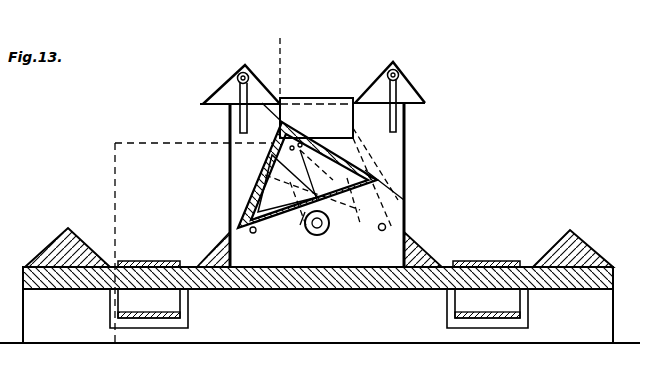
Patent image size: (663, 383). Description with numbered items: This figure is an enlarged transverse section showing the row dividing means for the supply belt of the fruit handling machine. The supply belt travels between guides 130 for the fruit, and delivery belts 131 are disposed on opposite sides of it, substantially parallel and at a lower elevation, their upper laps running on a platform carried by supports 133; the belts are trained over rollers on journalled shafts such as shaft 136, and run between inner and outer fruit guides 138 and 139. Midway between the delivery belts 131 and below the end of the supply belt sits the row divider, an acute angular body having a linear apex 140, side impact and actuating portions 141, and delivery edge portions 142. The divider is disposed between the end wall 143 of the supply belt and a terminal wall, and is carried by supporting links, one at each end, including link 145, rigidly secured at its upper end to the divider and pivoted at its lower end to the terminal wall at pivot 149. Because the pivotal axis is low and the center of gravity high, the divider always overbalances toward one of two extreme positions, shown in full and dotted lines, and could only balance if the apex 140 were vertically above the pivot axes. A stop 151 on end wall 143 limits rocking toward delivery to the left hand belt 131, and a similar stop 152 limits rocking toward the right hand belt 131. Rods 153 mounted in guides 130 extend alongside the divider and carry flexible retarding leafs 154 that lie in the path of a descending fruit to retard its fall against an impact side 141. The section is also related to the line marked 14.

The section line 14- 14 is at (192, 194).
The guides 130 is at (241, 78).
The delivery belts 131 is at (146, 261).
The supports 133 is at (346, 326).
The shaft 136 is at (326, 97).
The inner fruit guides 138 is at (212, 248).
The outer fruit guides 139 is at (58, 240).
The linear apex 140 is at (278, 124).
The side impact and actuating portions 141 is at (262, 177).
The delivery edge portions 142 is at (378, 180).
The end wall 143 is at (392, 152).
The supporting link 145 is at (300, 225).
The pivot 149 is at (320, 235).
The stop 151 is at (251, 233).
The stop 152 is at (381, 231).
The rods 153 is at (238, 82).
The flexible retarding leafs 154 is at (240, 121).